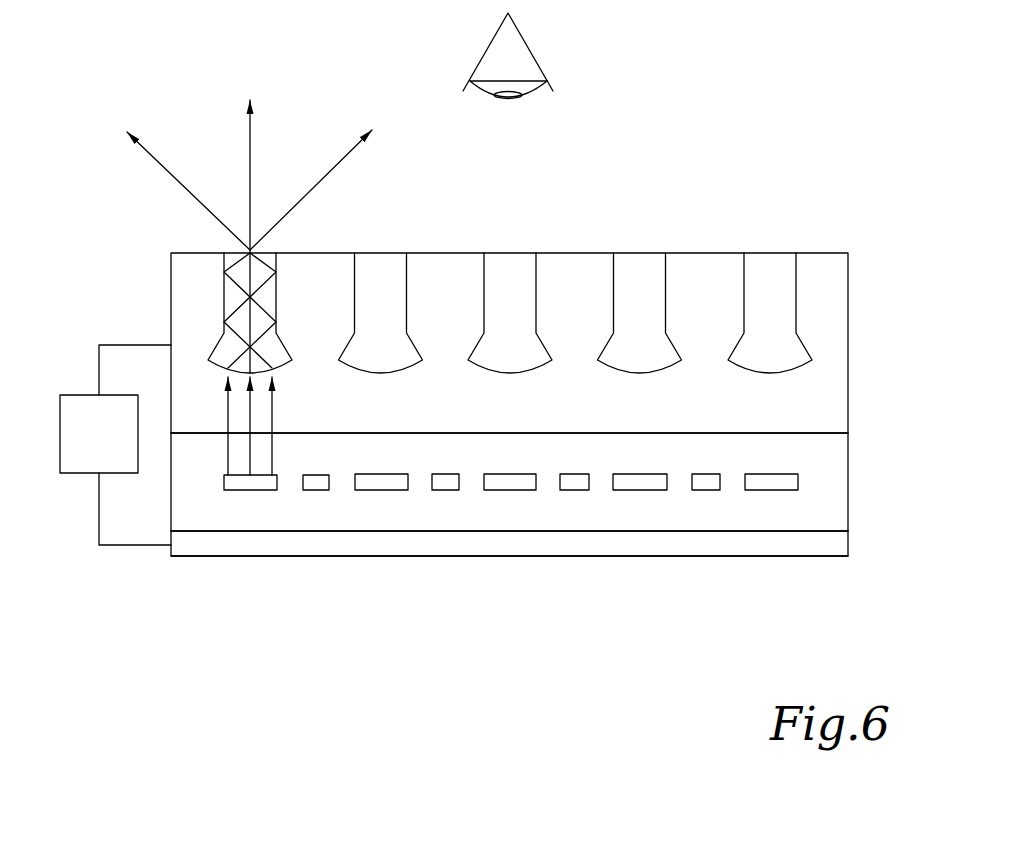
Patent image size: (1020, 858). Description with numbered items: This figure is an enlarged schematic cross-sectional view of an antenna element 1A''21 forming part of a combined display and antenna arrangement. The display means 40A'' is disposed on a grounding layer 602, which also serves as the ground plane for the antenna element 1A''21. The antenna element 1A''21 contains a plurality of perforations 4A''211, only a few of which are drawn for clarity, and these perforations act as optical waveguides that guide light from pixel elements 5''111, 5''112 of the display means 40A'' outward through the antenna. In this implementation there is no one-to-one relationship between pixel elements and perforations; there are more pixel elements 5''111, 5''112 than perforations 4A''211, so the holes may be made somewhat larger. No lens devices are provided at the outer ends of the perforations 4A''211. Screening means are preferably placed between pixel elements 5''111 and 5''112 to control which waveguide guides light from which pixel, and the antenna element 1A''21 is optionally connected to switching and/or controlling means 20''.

The perforation 4A''211 is at (231, 236).
The antenna element 1A''21 is at (554, 404).
The display means 40A'' is at (556, 482).
The grounding layer 602 is at (848, 540).
The switching and/or controlling means 20'' is at (115, 474).
The pixel element 5''111 is at (250, 510).
The pixel element 5''112 is at (344, 552).